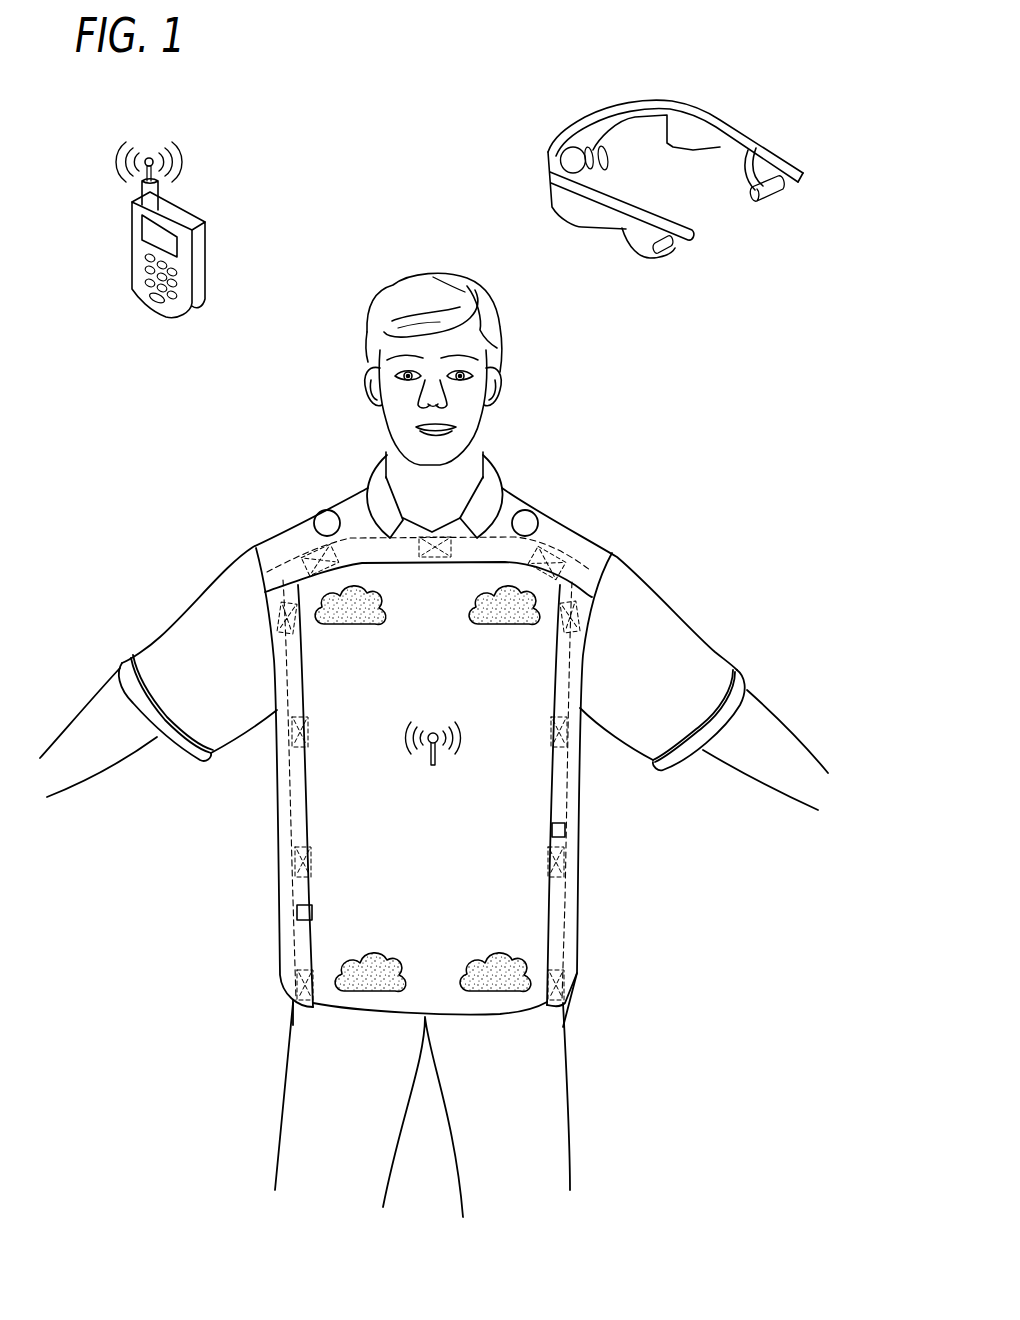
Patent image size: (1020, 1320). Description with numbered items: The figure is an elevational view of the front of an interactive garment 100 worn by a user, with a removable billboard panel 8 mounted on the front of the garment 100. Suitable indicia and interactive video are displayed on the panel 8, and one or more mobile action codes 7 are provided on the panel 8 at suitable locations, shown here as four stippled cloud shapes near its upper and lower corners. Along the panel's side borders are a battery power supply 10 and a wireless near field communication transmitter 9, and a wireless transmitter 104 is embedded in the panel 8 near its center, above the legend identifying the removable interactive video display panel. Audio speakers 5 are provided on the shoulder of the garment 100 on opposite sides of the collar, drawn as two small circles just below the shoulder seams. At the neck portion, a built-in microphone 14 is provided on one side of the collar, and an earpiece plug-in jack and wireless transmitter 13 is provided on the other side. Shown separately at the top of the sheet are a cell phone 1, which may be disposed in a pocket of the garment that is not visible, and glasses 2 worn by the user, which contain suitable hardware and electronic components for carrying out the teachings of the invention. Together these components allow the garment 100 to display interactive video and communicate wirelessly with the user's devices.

The cell phone 1 is at (133, 243).
The glasses 2 is at (693, 236).
The audio speakers 5 is at (315, 525).
The mobile action codes 7 is at (312, 613).
The removable billboard panel 8 is at (465, 892).
The wireless near field communication transmitter 9 is at (565, 830).
The battery power supply 10 is at (297, 912).
The earpiece plug-in jack and wireless transmitter 13 is at (420, 533).
The built-in microphone 14 is at (448, 532).
The garment 100 is at (434, 834).
The wireless transmitter 104 is at (460, 737).